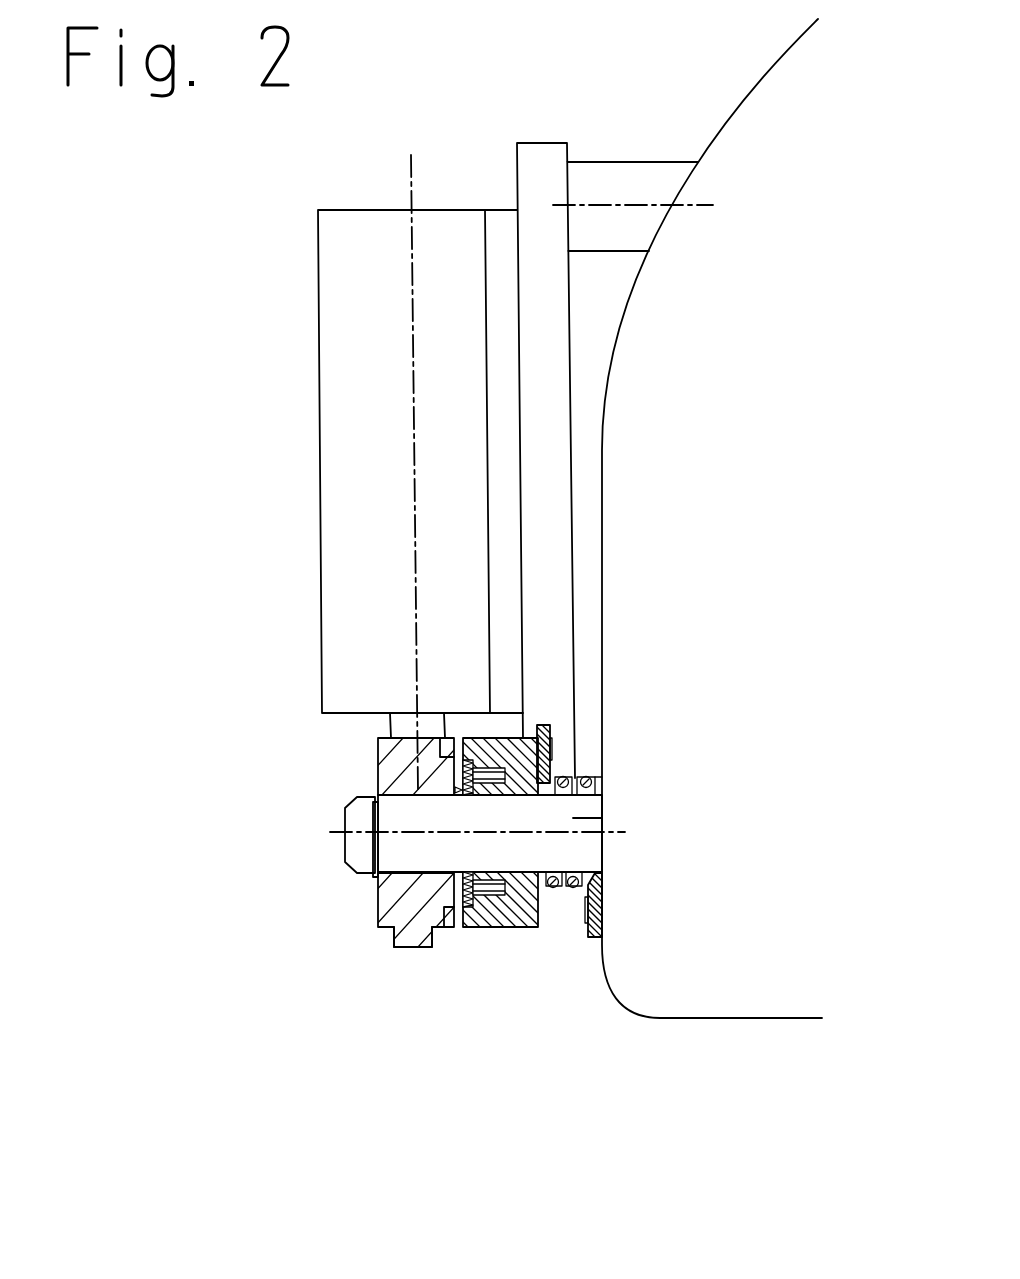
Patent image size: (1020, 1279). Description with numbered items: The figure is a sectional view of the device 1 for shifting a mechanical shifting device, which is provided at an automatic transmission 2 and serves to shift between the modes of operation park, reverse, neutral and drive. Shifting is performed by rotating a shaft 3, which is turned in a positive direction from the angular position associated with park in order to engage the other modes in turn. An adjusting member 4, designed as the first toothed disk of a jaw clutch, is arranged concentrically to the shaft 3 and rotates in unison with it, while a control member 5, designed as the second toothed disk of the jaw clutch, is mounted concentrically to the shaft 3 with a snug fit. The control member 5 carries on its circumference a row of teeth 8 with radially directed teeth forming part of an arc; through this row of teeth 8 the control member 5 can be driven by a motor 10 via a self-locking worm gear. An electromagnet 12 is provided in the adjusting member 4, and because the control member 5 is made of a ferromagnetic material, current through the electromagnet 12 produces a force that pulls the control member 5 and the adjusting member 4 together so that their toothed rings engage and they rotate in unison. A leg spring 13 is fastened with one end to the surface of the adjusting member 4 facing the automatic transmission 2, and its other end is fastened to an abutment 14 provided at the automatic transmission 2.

The device for shifting a mechanical shifting device 1 is at (177, 273).
The automatic transmission 2 is at (722, 945).
The shaft 3 is at (393, 853).
The adjusting member 4 is at (520, 917).
The control member 5 is at (385, 920).
The row of teeth 8 is at (407, 940).
The motor 10 is at (367, 443).
The electromagnet 12 is at (490, 890).
The leg spring 13 is at (553, 887).
The abutment 14 is at (593, 937).